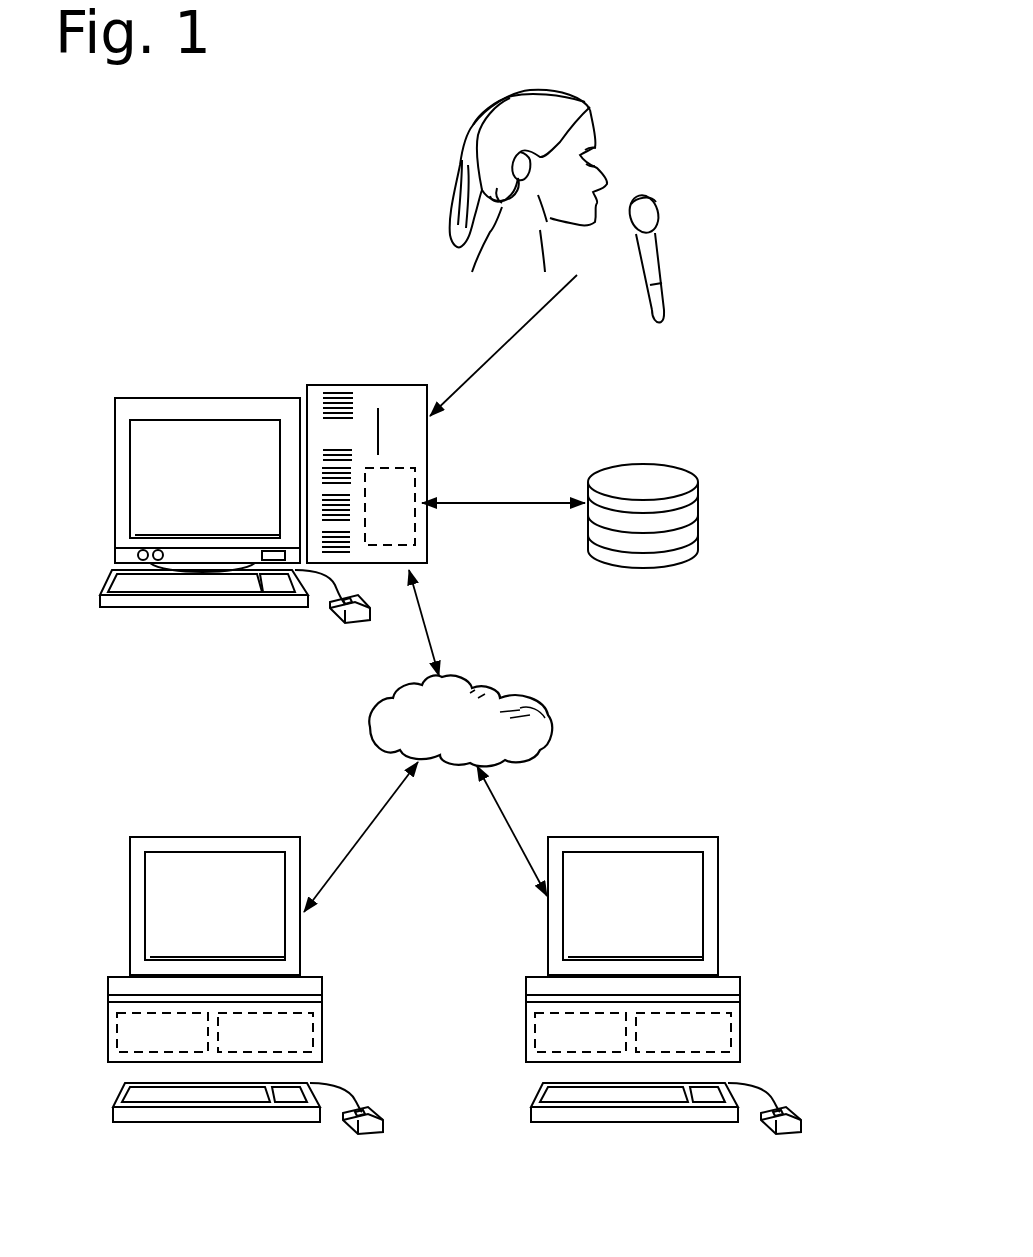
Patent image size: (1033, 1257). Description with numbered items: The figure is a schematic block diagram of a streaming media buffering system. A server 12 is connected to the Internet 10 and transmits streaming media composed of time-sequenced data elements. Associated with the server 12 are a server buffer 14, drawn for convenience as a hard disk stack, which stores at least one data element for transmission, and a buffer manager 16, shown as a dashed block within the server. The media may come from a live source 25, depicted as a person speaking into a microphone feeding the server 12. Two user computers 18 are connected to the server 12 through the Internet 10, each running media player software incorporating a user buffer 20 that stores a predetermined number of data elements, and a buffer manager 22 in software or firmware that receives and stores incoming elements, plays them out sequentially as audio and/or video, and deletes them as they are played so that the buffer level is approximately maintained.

The Internet 10 is at (460, 720).
The server 12 is at (300, 465).
The server buffer 14 is at (700, 528).
The buffer manager 16 is at (403, 525).
The user computer 18 is at (448, 985).
The user buffer 20 is at (297, 1042).
The buffer manager 22 is at (137, 1037).
The live source 25 is at (690, 168).